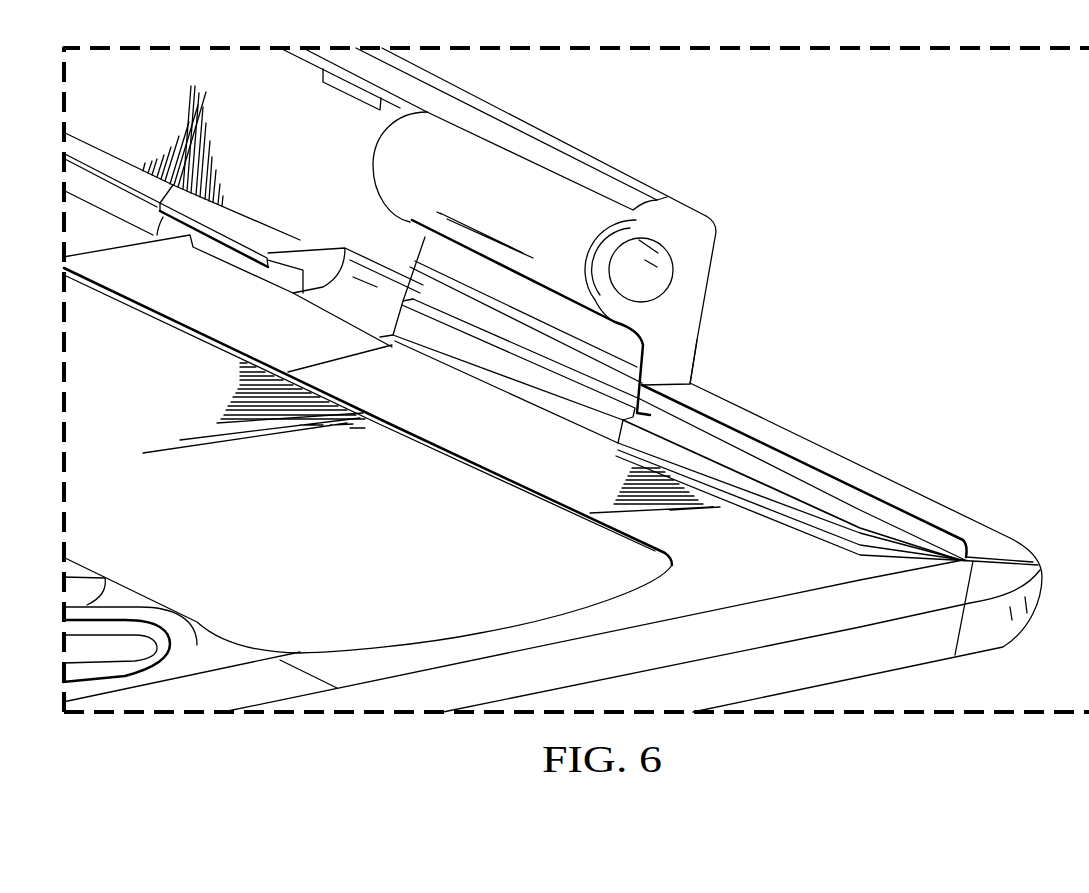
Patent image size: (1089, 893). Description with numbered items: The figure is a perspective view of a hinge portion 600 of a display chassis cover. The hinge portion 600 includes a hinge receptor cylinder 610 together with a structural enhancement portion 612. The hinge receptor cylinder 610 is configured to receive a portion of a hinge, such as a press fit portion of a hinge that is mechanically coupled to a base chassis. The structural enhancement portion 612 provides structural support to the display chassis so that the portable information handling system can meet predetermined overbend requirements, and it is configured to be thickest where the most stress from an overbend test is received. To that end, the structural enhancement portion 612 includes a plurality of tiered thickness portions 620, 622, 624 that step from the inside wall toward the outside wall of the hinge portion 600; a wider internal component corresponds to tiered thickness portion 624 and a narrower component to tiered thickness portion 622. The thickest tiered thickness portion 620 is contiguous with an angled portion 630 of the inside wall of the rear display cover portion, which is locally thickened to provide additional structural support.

The hinge portion 600 is at (856, 170).
The hinge receptor cylinder 610 is at (713, 230).
The structural enhancement portion 612 is at (705, 312).
The tiered thickness portion 620 is at (547, 392).
The tiered thickness portion 622 is at (475, 310).
The tiered thickness portion 624 is at (392, 254).
The angled portion 630 is at (793, 535).